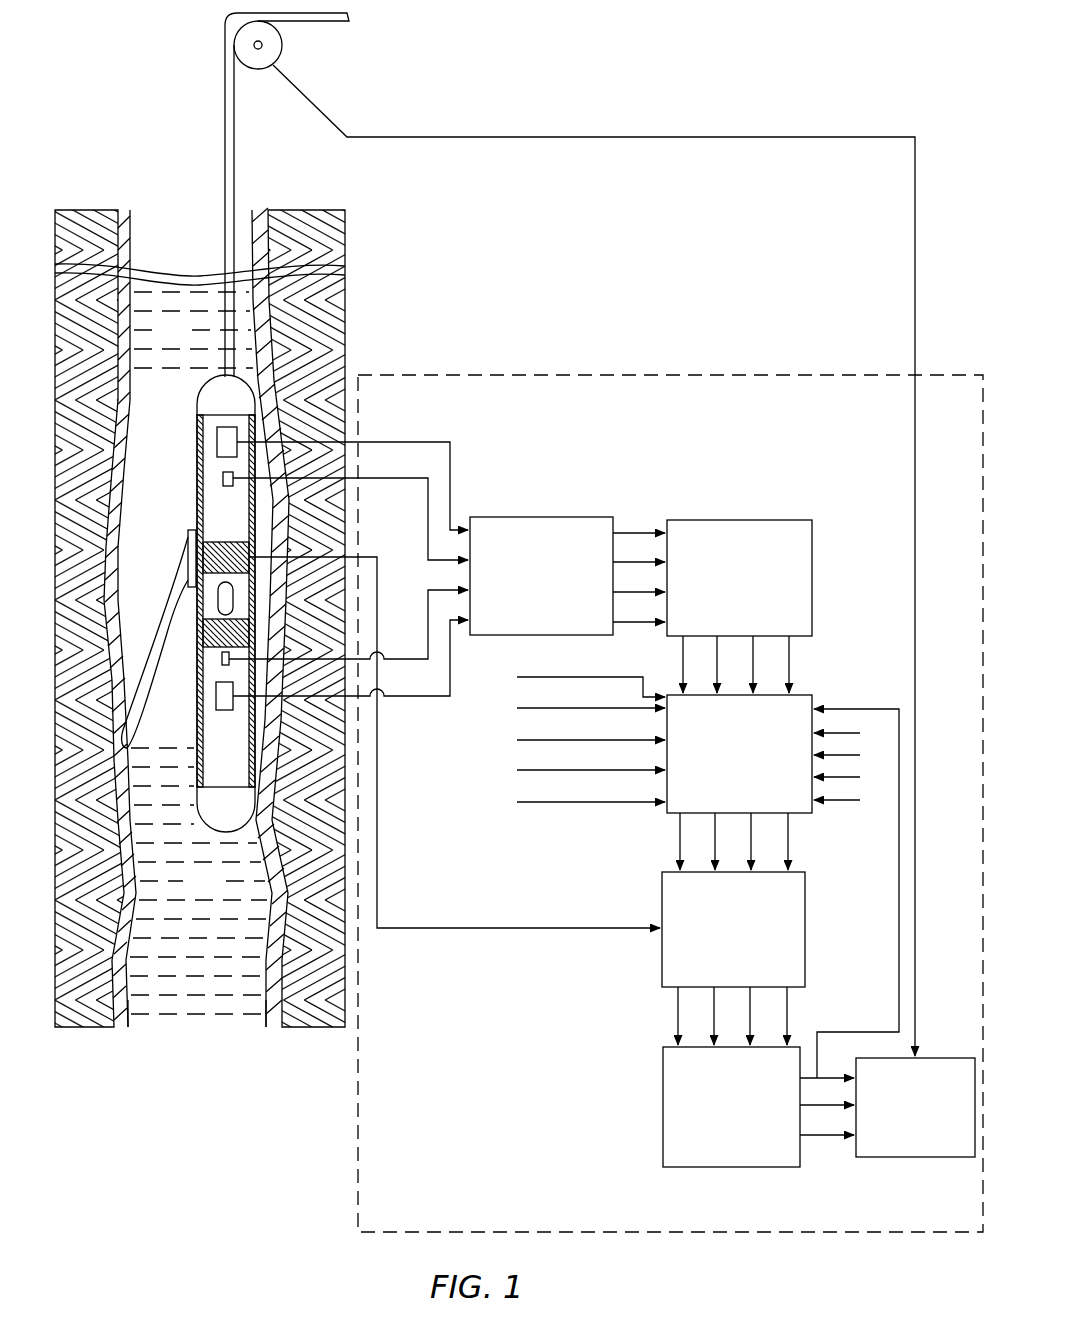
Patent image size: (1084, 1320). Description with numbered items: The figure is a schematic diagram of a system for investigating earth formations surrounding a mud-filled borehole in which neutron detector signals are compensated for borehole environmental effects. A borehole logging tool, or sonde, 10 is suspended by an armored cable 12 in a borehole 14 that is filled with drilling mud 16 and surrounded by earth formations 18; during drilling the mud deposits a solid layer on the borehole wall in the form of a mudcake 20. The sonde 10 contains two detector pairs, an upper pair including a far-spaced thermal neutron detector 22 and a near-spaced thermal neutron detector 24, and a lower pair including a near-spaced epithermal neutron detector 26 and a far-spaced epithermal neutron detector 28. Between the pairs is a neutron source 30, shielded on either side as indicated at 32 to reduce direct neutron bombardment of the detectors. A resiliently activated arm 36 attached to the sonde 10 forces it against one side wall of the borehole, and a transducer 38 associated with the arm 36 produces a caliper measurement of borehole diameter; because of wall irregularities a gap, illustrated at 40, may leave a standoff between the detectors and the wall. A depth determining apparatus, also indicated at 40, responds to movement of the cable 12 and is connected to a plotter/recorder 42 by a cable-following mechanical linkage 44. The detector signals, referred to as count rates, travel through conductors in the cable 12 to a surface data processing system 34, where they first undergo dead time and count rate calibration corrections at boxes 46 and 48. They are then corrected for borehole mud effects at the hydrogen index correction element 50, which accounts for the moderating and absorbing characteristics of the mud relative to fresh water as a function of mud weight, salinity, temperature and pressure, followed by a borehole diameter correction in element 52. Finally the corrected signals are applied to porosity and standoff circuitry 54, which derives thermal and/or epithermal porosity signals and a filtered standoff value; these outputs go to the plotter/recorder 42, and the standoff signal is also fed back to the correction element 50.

The borehole logging tool 10 is at (184, 444).
The armored cable 12 is at (236, 157).
The borehole 14 is at (185, 226).
The drilling mud 16 is at (198, 653).
The earth formations 18 is at (89, 457).
The mudcake 20 is at (262, 871).
The far-spaced thermal neutron detector 22 is at (215, 447).
The near-spaced thermal neutron detector 24 is at (219, 480).
The near-spaced epithermal neutron detector 26 is at (221, 662).
The far-spaced epithermal neutron detector 28 is at (215, 696).
The neutron source 30 is at (201, 632).
The shielding 32 is at (235, 587).
The surface data processing system 34 is at (638, 368).
The resiliently activated arm 36 is at (157, 609).
The transducer 38 is at (187, 546).
The depth determining apparatus 40 is at (282, 43).
The plotter/recorder 42 is at (887, 1157).
The mechanical linkage 44 is at (645, 137).
The dead time correction 46 is at (510, 515).
The count rate calibration correction 48 is at (705, 518).
The hydrogen index correction element 50 is at (812, 702).
The borehole diameter correction element 52 is at (805, 878).
The porosity and standoff circuitry 54 is at (663, 1086).